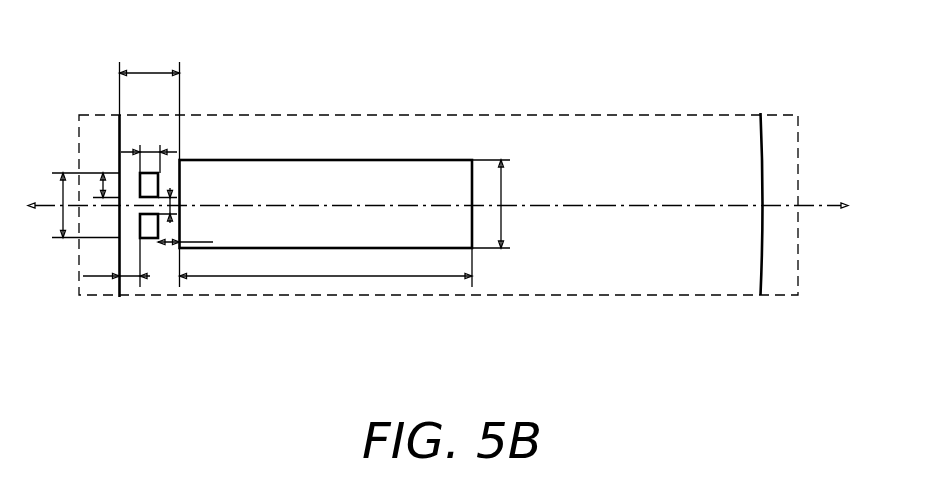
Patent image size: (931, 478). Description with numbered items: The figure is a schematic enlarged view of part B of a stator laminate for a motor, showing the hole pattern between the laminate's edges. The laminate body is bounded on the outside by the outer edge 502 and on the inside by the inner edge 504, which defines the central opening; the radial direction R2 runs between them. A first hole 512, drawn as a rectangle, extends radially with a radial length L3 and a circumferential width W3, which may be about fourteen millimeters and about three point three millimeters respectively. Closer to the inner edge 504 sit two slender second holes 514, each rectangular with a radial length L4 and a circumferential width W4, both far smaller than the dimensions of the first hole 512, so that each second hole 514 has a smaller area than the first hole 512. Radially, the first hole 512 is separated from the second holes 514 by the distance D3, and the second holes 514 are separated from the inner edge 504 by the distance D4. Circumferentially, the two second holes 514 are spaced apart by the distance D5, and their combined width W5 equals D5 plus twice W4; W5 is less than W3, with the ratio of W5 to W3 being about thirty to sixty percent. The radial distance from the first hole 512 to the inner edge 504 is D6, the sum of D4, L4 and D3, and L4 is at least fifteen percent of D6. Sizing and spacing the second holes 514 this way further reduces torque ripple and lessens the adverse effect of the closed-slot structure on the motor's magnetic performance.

The outer edge 502 is at (763, 262).
The inner edge 504 is at (118, 130).
The first hole 512 is at (312, 183).
The second hole 514 is at (149, 182).
The part B is at (580, 115).
The optical axis direction R2 is at (438, 194).
The distance between first hole and second hole D3 is at (185, 235).
The distance between second hole and inner edge D4 is at (116, 262).
The distance between the two second holes D5 is at (169, 198).
The radial distance from first hole to inner edge D6 is at (150, 105).
The radial length of first hole L3 is at (326, 267).
The radial length of second hole L4 is at (149, 153).
The circumferential width of first hole W3 is at (502, 204).
The circumferential width of second hole W4 is at (86, 177).
The width of the combination of two second holes W5 is at (78, 205).